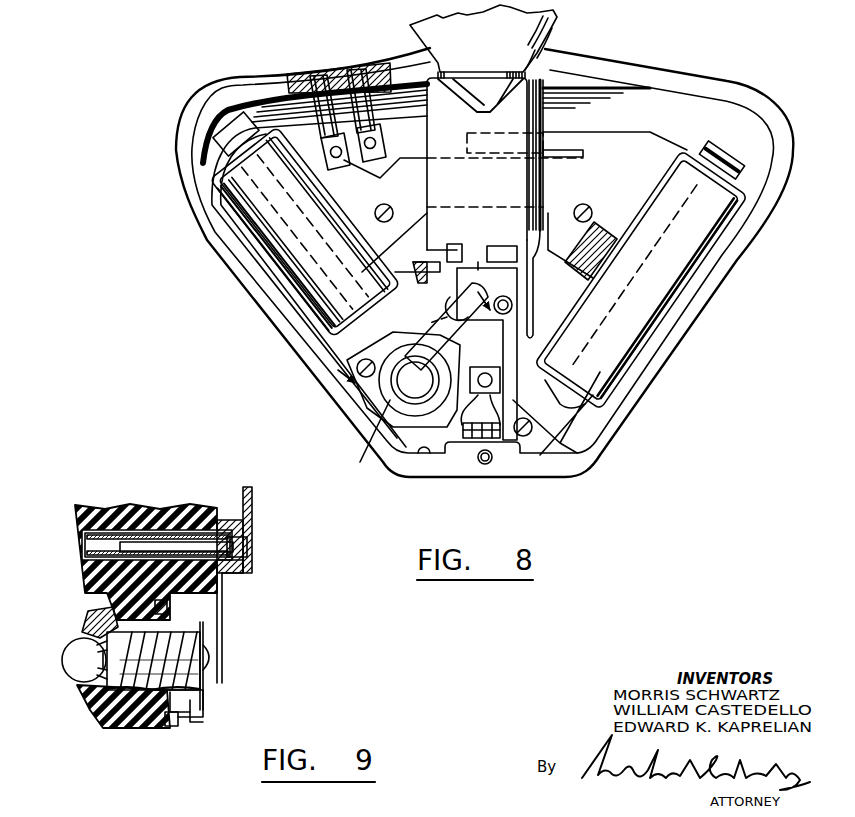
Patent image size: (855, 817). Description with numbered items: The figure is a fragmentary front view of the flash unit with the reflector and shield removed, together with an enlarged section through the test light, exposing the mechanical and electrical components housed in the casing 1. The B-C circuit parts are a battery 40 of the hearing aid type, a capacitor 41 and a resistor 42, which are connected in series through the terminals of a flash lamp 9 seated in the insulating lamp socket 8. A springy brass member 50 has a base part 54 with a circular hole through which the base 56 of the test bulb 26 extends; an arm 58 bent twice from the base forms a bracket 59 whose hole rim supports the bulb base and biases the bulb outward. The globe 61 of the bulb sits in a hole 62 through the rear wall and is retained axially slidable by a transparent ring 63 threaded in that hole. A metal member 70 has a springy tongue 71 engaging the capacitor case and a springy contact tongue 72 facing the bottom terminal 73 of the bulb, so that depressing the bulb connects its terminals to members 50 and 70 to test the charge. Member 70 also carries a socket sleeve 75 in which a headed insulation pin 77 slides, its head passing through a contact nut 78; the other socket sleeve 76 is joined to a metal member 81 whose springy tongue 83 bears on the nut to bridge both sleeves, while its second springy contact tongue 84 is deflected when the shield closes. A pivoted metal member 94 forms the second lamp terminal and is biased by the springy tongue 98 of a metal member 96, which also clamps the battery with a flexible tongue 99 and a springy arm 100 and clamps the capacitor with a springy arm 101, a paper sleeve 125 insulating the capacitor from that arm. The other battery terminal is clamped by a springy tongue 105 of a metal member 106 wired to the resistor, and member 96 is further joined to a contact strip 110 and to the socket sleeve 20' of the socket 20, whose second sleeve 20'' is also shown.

In FIG. 8, the casing 1 is at (727, 277).
In FIG. 9, the casing 1 is at (105, 717).
In FIG. 8, the lamp socket 8 is at (548, 124).
In FIG. 8, the flash lamp 9 is at (548, 25).
In FIG. 8, the socket 20 is at (316, 52).
In FIG. 8, the socket sleeve 20' is at (347, 110).
In FIG. 8, the terminal tab 20'' is at (345, 96).
In FIG. 9, the test bulb 26 is at (74, 682).
In FIG. 8, the battery 40 is at (645, 308).
In FIG. 8, the capacitor 41 is at (285, 245).
In FIG. 8, the resistor 42 is at (497, 440).
In FIG. 9, the member 50 is at (194, 725).
In FIG. 9, the base part 54 is at (168, 607).
In FIG. 9, the base 56 is at (185, 692).
In FIG. 8, the arm 58 is at (405, 380).
In FIG. 9, the arm 58 is at (175, 728).
In FIG. 8, the bracket 59 is at (365, 440).
In FIG. 9, the bracket 59 is at (207, 633).
In FIG. 9, the globe 61 is at (68, 655).
In FIG. 9, the hole 62 is at (190, 702).
In FIG. 9, the ring 63 is at (87, 615).
In FIG. 8, the metal member 70 is at (430, 262).
In FIG. 9, the metal member 70 is at (225, 520).
In FIG. 8, the springy tongue 71 is at (395, 272).
In FIG. 8, the springy contact tongue 72 is at (390, 405).
In FIG. 9, the springy contact tongue 72 is at (223, 645).
In FIG. 9, the bottom terminal 73 is at (213, 660).
In FIG. 9, the socket sleeve 75 is at (103, 507).
In FIG. 8, the socket sleeve 76 is at (495, 310).
In FIG. 9, the headed insulation pin 77 is at (163, 537).
In FIG. 9, the contact nut 78 is at (237, 580).
In FIG. 8, the metal member 81 is at (478, 270).
In FIG. 8, the springy tongue 83 is at (462, 300).
In FIG. 9, the springy tongue 83 is at (253, 507).
In FIG. 8, the springy contact tongue 84 is at (483, 372).
In FIG. 8, the metal member 94 is at (546, 245).
In FIG. 8, the metal member 96 is at (627, 157).
In FIG. 8, the springy tongue 98 is at (560, 145).
In FIG. 8, the flexible tongue 99 is at (727, 150).
In FIG. 8, the springy arm 100 is at (600, 233).
In FIG. 8, the springy arm 101 is at (378, 207).
In FIG. 8, the springy tongue 105 is at (553, 400).
In FIG. 8, the metal member 106 is at (552, 445).
In FIG. 8, the contact strip 110 is at (323, 347).
In FIG. 8, the paper sleeve 125 is at (290, 288).